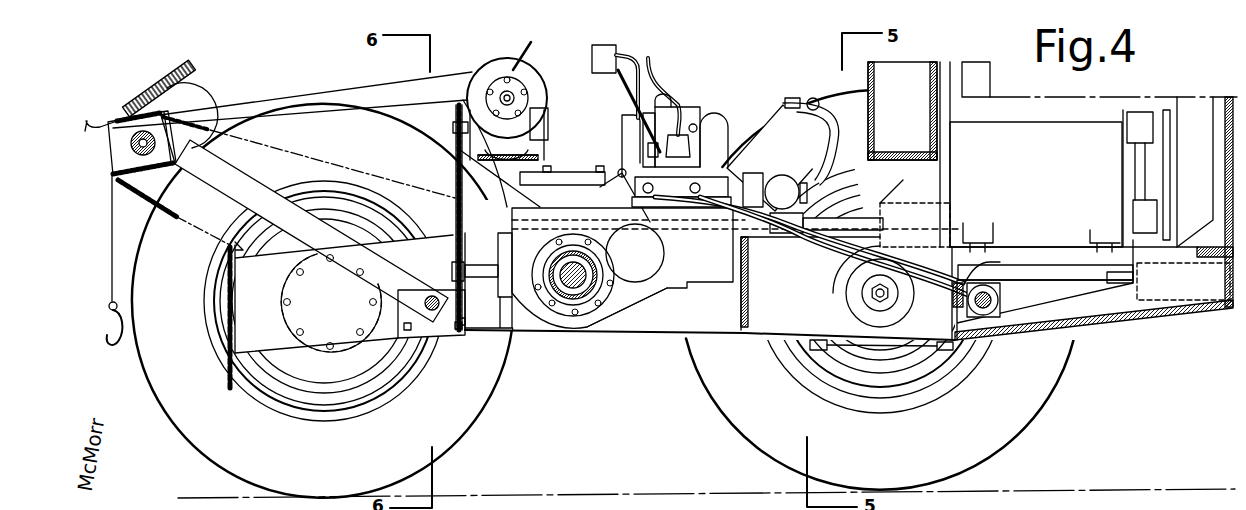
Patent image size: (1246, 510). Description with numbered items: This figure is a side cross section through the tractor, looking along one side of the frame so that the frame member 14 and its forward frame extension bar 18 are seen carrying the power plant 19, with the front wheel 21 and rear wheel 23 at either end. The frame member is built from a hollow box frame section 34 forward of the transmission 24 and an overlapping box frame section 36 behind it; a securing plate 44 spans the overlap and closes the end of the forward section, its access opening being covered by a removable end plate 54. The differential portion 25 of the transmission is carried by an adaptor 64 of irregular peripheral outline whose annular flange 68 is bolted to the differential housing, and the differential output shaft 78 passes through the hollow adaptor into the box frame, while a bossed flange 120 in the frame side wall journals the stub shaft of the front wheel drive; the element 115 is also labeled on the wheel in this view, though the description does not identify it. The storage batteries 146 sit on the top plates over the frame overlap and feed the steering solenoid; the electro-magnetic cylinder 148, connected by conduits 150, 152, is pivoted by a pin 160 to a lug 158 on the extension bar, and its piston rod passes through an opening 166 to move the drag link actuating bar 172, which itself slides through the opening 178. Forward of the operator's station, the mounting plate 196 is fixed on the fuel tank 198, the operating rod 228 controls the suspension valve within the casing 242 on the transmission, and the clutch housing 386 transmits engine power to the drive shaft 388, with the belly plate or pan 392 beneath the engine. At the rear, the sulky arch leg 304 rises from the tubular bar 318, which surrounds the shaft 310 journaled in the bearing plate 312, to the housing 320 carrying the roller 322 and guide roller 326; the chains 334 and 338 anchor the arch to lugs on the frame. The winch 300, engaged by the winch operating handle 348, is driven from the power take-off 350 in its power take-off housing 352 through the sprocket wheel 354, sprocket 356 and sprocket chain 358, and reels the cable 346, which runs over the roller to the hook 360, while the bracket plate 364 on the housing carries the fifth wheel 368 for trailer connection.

The frame member 14 is at (679, 339).
The frame extension bar 18 is at (1107, 315).
The power plant 19 is at (1142, 104).
The front wheel 21 is at (1069, 392).
The rear wheel 23 is at (198, 463).
The transmission 24 is at (658, 307).
The differential portion 25 is at (575, 344).
The box frame section 34 is at (713, 320).
The box frame section 36 is at (482, 325).
The securing plate 44 is at (508, 333).
The end plate 54 is at (502, 332).
The adaptor 64 is at (613, 293).
The annular flange 68 is at (577, 317).
The differential output shaft 78 is at (587, 267).
The wheel rim 115 is at (323, 350).
The bossed flange 120 is at (853, 300).
The storage batteries 146 is at (572, 172).
The electro-magnetic cylinder 148 is at (1002, 293).
The line or conduit 150 is at (780, 253).
The line or conduit 152 is at (807, 260).
The lug 158 is at (983, 290).
The pin 160 is at (1000, 302).
The opening 166 is at (993, 318).
The drag link actuating bar 172 is at (957, 290).
The opening 178 is at (967, 308).
The mounting plate 196 is at (860, 82).
The fuel tank 198 is at (937, 62).
The operating rod 228 is at (626, 90).
The casing 242 is at (628, 136).
The winch 300 is at (485, 60).
The leg 304 is at (222, 188).
The shaft 310 is at (388, 307).
The bearing plate 312 is at (398, 323).
The tubular bar 318 is at (432, 296).
The housing 320 is at (118, 180).
The roller 322 is at (150, 157).
The guide roller 326 is at (110, 137).
The link chain 334 is at (262, 122).
The chain length 338 is at (145, 213).
The cable 346 is at (340, 97).
The winch operating handle 348 is at (530, 44).
The power take-off 350 is at (672, 95).
The power take-off housing 352 is at (510, 297).
The sprocket wheel 354 is at (452, 262).
The sprocket 356 is at (455, 108).
The sprocket chain 358 is at (455, 153).
The hook 360 is at (100, 352).
The bracket plate 364 is at (202, 98).
The fifth wheel 368 is at (150, 100).
The clutch housing 386 is at (955, 182).
The drive shaft 388 is at (850, 230).
The belly plate or pan 392 is at (1160, 318).